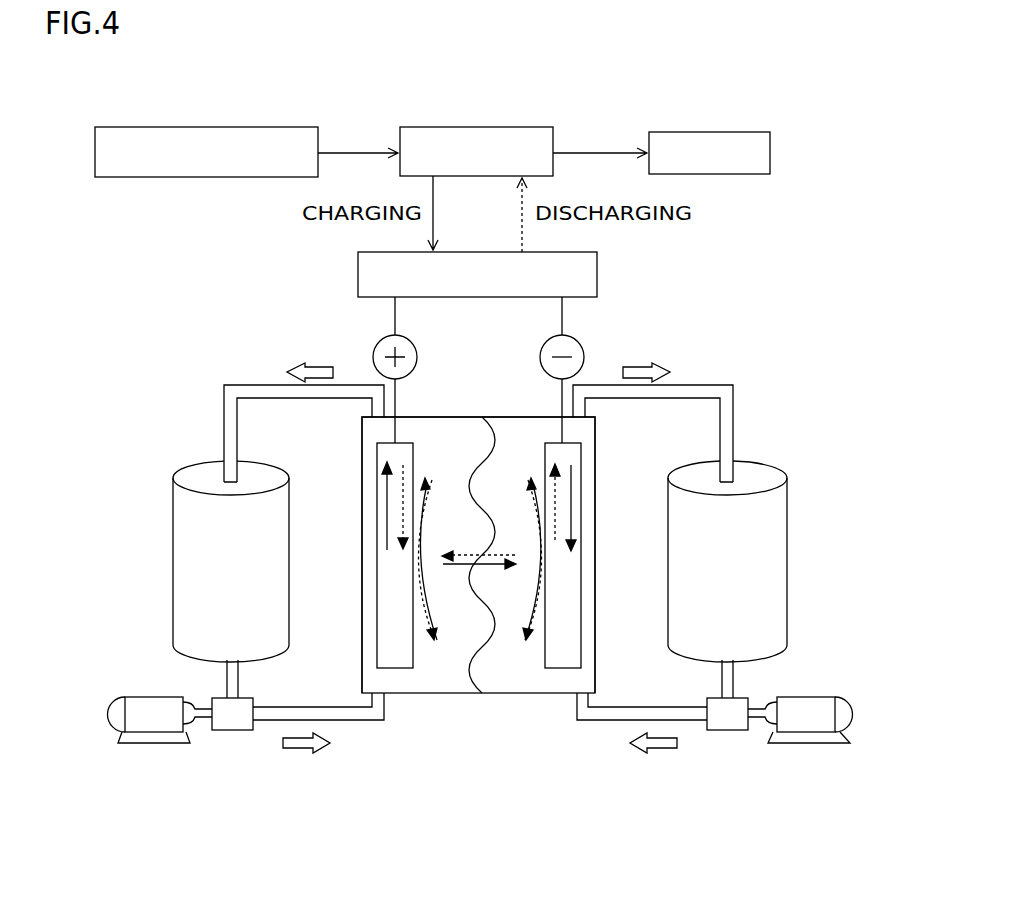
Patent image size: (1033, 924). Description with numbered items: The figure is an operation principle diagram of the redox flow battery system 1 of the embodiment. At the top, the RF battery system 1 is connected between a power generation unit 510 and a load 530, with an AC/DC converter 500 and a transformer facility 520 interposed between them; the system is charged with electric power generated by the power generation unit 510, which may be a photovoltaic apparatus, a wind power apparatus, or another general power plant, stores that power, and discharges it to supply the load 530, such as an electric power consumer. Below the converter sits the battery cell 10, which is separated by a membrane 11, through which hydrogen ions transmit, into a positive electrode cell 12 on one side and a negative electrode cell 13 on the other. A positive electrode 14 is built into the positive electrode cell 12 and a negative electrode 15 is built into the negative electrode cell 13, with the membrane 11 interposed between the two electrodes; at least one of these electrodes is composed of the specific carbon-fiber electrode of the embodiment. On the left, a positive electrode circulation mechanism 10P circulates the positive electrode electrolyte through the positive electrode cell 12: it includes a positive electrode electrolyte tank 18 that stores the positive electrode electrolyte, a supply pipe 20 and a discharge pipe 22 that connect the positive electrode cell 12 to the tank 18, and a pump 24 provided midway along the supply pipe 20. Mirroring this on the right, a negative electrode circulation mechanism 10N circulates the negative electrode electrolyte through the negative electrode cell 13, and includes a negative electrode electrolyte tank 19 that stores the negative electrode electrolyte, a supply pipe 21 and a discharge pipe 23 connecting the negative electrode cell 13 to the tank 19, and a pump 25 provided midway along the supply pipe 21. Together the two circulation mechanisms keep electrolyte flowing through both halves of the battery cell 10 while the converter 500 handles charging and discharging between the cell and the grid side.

The redox flow battery system 1 is at (479, 535).
The battery cell 10 is at (486, 622).
The membrane 11 is at (477, 598).
The positive electrode cell 12 is at (404, 593).
The negative electrode cell 13 is at (563, 593).
The positive electrode 14 is at (372, 644).
The negative electrode 15 is at (596, 652).
The positive electrode electrolyte tank 18 is at (188, 461).
The negative electrode electrolyte tank 19 is at (770, 461).
The supply pipe 20 is at (351, 722).
The supply pipe 21 is at (610, 722).
The discharge pipe 22 is at (263, 383).
The discharge pipe 23 is at (692, 383).
The pump 24 is at (140, 697).
The pump 25 is at (818, 697).
The positive electrode circulation mechanism 10P is at (179, 737).
The negative electrode circulation mechanism 10N is at (780, 737).
The AC/DC converter 500 is at (598, 270).
The power generation unit 510 is at (232, 125).
The transformer facility 520 is at (472, 125).
The load 530 is at (705, 130).